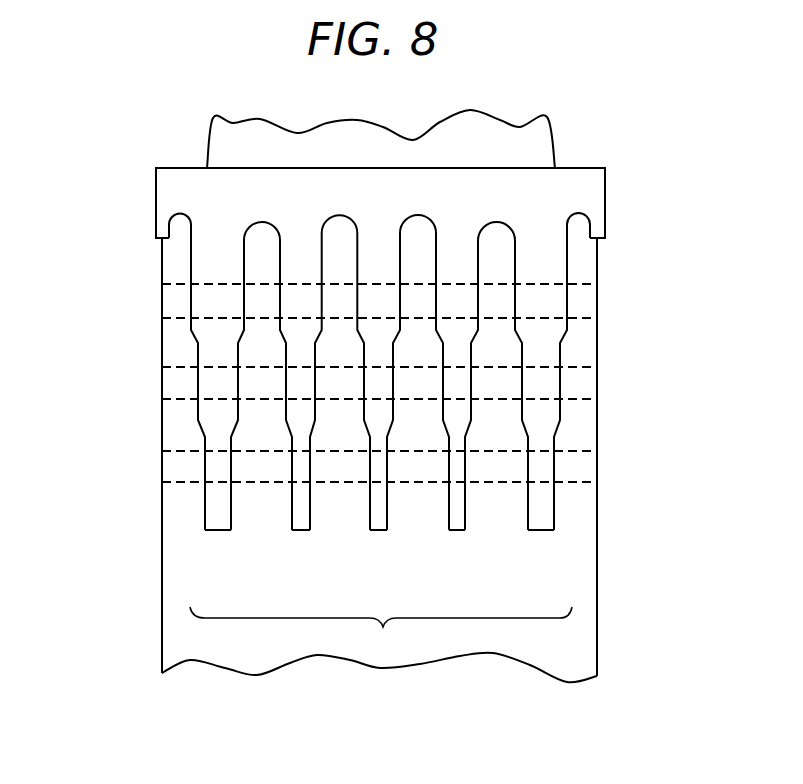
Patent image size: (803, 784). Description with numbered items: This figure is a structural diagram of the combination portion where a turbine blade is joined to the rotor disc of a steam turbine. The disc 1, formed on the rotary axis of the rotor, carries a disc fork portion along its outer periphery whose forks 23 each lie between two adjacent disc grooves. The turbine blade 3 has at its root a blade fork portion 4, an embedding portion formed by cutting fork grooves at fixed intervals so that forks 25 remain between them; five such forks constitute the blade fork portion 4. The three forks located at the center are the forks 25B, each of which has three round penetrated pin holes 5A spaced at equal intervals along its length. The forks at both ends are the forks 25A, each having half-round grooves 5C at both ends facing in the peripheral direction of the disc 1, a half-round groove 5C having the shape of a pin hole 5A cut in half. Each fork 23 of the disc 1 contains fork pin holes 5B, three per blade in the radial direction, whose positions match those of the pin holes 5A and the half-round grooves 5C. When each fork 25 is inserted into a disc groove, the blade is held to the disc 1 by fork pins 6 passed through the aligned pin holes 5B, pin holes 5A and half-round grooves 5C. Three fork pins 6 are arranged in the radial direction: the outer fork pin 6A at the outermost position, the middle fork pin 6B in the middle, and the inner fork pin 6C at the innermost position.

The disc 1 is at (160, 540).
The turbine blade 3 is at (552, 143).
The blade fork portion 4 is at (162, 202).
The pin hole 5A is at (457, 317).
The fork pin hole 5B is at (182, 317).
The half-round groove 5C is at (217, 317).
The fork 23 is at (406, 230).
The fork pin 6 is at (436, 363).
The outer fork pin 6A is at (580, 285).
The middle fork pin 6B is at (580, 366).
The inner fork pin 6C is at (412, 450).
The fork 25 is at (381, 632).
The fork at both ends 25A is at (215, 532).
The center fork 25B is at (452, 532).